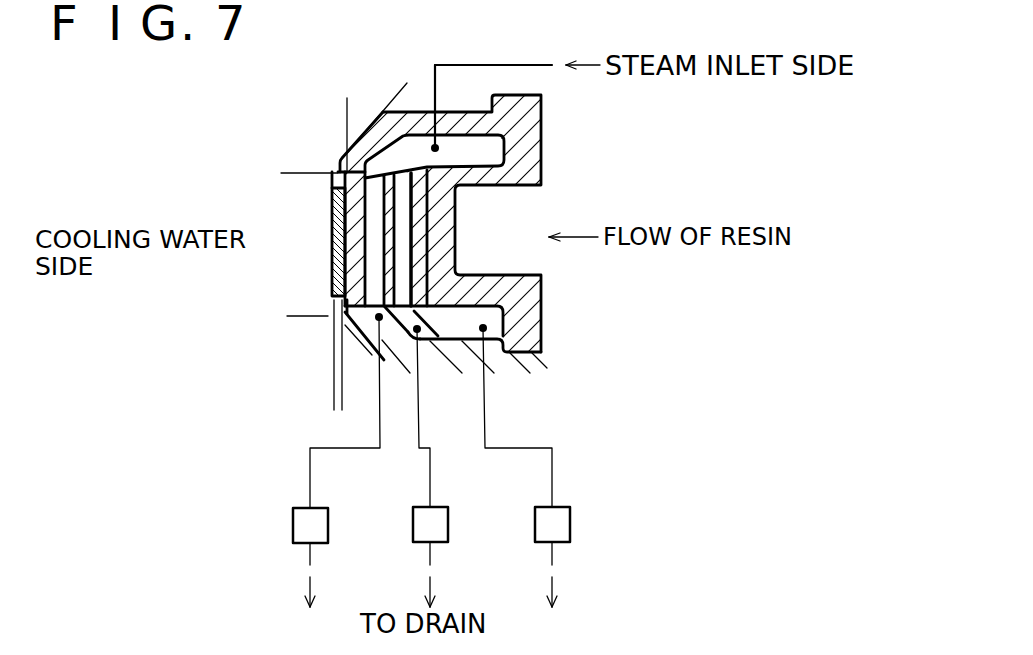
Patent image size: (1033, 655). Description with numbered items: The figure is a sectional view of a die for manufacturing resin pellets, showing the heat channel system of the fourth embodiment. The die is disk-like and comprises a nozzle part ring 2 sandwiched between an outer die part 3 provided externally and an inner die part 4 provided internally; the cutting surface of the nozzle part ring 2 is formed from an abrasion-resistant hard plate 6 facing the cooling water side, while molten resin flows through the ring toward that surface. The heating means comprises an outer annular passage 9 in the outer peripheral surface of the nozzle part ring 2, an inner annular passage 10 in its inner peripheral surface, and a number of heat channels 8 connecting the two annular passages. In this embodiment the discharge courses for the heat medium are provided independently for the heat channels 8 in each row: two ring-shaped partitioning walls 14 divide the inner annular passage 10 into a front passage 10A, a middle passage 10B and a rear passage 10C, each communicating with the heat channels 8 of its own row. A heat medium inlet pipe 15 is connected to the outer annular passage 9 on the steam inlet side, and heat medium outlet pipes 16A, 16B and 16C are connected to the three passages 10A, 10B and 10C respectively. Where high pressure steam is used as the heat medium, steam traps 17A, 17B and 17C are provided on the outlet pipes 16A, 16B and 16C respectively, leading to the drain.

The nozzle part ring 2 is at (296, 173).
The outer die part 3 is at (296, 173).
The inner die part 4 is at (296, 316).
The hard plate 6 is at (331, 285).
The heat channels 8 is at (359, 172).
The outer annular passage 9 is at (475, 164).
The inner annular passage 10 is at (497, 353).
The front passage 10A is at (376, 320).
The middle passage 10B is at (421, 335).
The rear passage 10C is at (505, 316).
The partitioning walls 14 is at (392, 326).
The heat medium inlet pipe 15 is at (530, 66).
The heat medium outlet pipe 16A is at (310, 477).
The heat medium outlet pipe 16B is at (430, 477).
The heat medium outlet pipe 16C is at (552, 477).
The steam trap 17A is at (328, 530).
The steam trap 17B is at (448, 530).
The steam trap 17C is at (570, 530).